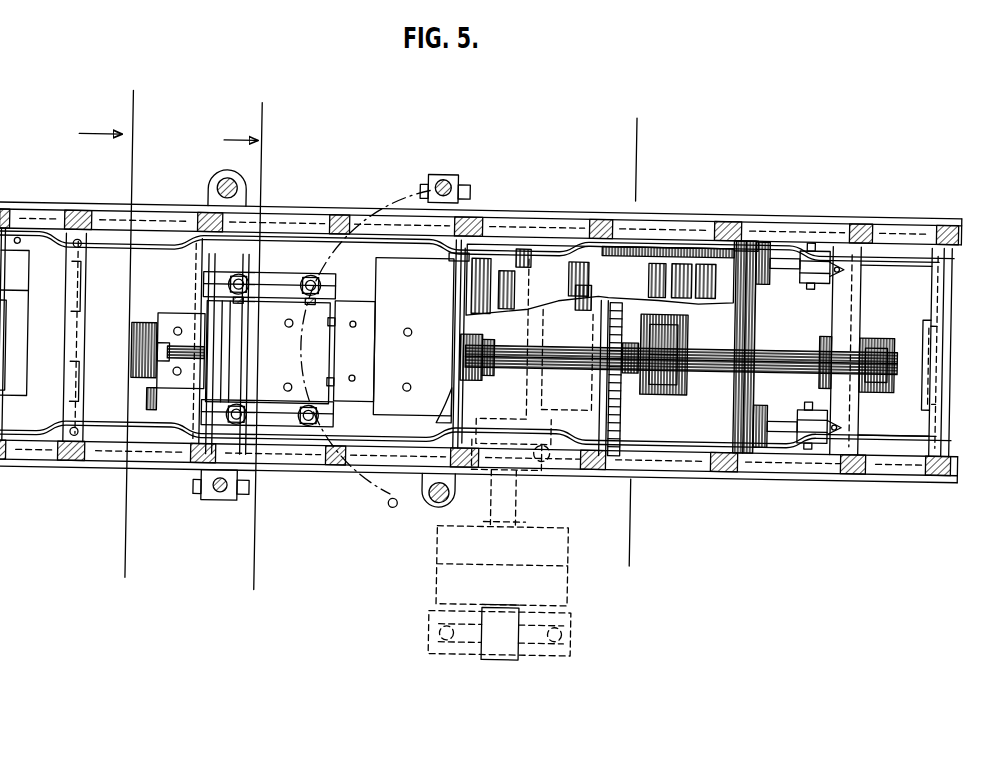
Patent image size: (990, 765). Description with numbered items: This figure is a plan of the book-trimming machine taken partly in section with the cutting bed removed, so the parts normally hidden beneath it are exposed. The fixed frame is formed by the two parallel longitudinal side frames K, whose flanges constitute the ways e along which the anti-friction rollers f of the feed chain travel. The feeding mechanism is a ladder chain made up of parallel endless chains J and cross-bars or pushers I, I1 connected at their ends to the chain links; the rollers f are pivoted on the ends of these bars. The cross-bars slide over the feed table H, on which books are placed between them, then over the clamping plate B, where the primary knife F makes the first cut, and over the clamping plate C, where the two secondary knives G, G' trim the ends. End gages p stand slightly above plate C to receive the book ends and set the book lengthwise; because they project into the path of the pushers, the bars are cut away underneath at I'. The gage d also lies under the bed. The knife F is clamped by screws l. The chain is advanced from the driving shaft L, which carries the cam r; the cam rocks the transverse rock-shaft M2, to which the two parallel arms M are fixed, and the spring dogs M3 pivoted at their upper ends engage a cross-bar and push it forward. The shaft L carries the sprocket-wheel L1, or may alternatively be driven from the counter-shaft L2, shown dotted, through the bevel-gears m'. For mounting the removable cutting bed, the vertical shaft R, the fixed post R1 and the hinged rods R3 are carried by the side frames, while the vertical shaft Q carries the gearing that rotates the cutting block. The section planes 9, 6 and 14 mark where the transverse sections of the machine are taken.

The side frame K is at (481, 217).
The endless chain J is at (521, 231).
The cross-bar I is at (478, 347).
The cross-bar I1 is at (2, 290).
The cut-away portion of cross-bar I' is at (14, 349).
The gage d is at (244, 333).
The clamping plate C is at (268, 352).
The end guide or gage p is at (268, 350).
The secondary knife G is at (274, 277).
The secondary knife G' is at (272, 449).
The way e is at (248, 305).
The clamping plate B is at (413, 337).
The primary trimming knife F is at (466, 318).
The feed table H is at (600, 282).
The driving shaft L is at (513, 345).
The clamping screw l is at (458, 375).
The bevel-gears m' is at (535, 351).
The sprocket-wheel L1 is at (624, 408).
The cam r is at (664, 351).
The rock-shaft M2 is at (757, 335).
The spring dog or pawl M3 is at (770, 410).
The arm M is at (812, 249).
The counter-shaft L2 is at (661, 498).
The upright post R1 is at (222, 177).
The pivoted rod R3 is at (445, 172).
The vertical shaft R is at (441, 497).
The vertical shaft Q is at (394, 498).
The anti-friction roller f is at (85, 210).
The section line 9— 9 is at (104, 329).
The section line 6— 6 is at (245, 346).
The section line 14— 14 is at (634, 342).